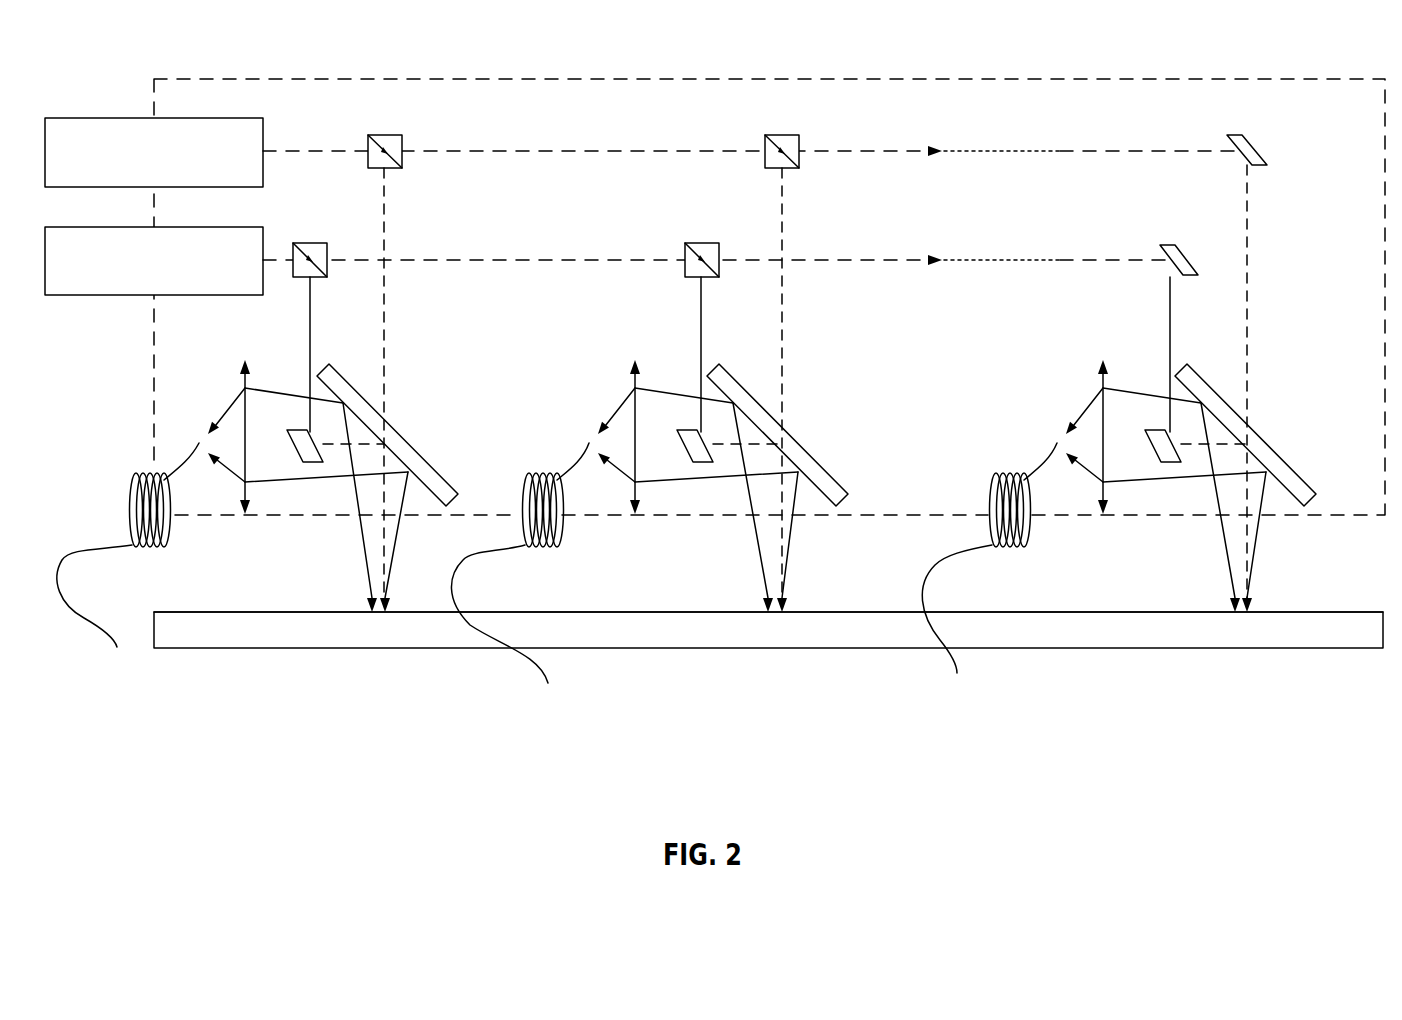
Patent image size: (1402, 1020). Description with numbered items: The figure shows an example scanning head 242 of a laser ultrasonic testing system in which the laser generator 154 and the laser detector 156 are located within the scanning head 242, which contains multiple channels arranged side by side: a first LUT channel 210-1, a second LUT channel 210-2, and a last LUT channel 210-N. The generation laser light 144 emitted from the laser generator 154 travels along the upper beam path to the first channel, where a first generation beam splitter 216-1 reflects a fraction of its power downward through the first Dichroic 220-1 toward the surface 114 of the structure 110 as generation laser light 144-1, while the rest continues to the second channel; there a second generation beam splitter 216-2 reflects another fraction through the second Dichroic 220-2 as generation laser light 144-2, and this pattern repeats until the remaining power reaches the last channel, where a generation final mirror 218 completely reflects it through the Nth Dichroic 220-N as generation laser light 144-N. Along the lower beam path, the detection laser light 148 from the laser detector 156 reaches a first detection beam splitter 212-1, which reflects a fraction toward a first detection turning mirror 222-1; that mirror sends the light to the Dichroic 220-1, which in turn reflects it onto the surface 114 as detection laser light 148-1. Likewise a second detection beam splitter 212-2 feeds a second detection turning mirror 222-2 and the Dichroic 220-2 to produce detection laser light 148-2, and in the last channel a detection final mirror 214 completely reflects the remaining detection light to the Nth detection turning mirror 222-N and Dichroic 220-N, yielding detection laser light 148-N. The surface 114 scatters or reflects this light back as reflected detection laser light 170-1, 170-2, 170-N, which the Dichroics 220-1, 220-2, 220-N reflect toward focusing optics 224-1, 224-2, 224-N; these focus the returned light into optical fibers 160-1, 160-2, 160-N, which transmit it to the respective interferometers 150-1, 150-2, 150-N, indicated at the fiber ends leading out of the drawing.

The scanning head 242 is at (1043, 79).
The laser generator 154 is at (112, 117).
The laser detector 156 is at (122, 226).
The generation laser light 144 is at (285, 150).
The detection laser light 148 is at (273, 262).
The structure 110 is at (267, 642).
The surface 114 is at (1317, 612).
The first LUT channel 210-1 is at (251, 409).
The second LUT channel 210-2 is at (666, 426).
The Nth LUT channel 210-N is at (1106, 424).
The first generation beam splitter 216-1 is at (395, 168).
The second generation beam splitter 216-2 is at (790, 168).
The first detection beam splitter 212-1 is at (318, 242).
The second detection beam splitter 212-2 is at (700, 243).
The generation final mirror 218 is at (1257, 165).
The detection final mirror 214 is at (1170, 247).
The first Dichroic 220-1 is at (403, 433).
The second Dichroic 220-2 is at (787, 437).
The Nth Dichroic 220-N is at (1263, 437).
The first detection turning mirror 222-1 is at (317, 463).
The second detection turning mirror 222-2 is at (707, 462).
The Nth detection turning mirror 222-N is at (1177, 462).
The first focusing optics 224-1 is at (243, 388).
The second focusing optics 224-2 is at (633, 380).
The Nth focusing optics 224-N is at (1100, 366).
The first reflected detection laser light 170-1 is at (227, 406).
The second reflected detection laser light 170-2 is at (622, 400).
The Nth reflected detection laser light 170-N is at (1088, 402).
The first optical fiber 160-1 is at (129, 499).
The second optical fiber 160-2 is at (523, 497).
The Nth optical fiber 160-N is at (990, 497).
The first interferometer 150-1 is at (117, 631).
The second interferometer 150-2 is at (548, 648).
The Nth interferometer 150-N is at (958, 644).
The first detection laser light 148-1 is at (368, 558).
The second detection laser light 148-2 is at (764, 577).
The Nth detection laser light 148-N is at (1227, 572).
The first generation laser light 144-1 is at (390, 565).
The second generation laser light 144-2 is at (787, 540).
The Nth generation laser light 144-N is at (1250, 540).